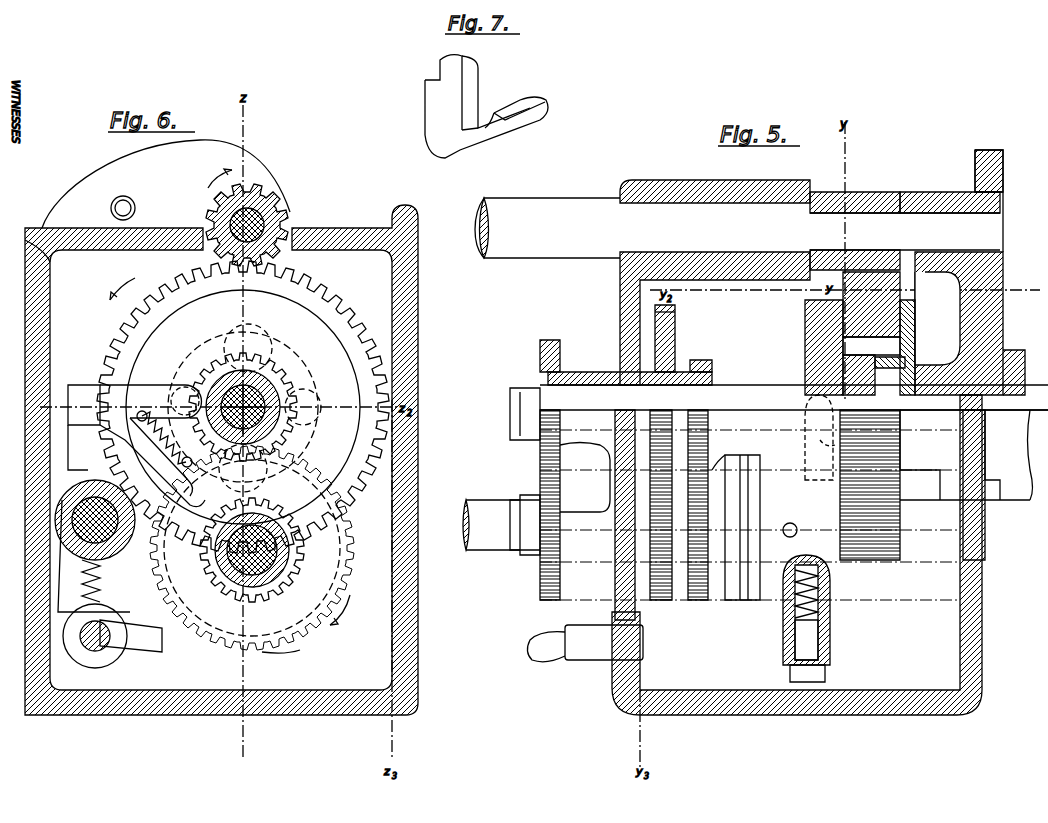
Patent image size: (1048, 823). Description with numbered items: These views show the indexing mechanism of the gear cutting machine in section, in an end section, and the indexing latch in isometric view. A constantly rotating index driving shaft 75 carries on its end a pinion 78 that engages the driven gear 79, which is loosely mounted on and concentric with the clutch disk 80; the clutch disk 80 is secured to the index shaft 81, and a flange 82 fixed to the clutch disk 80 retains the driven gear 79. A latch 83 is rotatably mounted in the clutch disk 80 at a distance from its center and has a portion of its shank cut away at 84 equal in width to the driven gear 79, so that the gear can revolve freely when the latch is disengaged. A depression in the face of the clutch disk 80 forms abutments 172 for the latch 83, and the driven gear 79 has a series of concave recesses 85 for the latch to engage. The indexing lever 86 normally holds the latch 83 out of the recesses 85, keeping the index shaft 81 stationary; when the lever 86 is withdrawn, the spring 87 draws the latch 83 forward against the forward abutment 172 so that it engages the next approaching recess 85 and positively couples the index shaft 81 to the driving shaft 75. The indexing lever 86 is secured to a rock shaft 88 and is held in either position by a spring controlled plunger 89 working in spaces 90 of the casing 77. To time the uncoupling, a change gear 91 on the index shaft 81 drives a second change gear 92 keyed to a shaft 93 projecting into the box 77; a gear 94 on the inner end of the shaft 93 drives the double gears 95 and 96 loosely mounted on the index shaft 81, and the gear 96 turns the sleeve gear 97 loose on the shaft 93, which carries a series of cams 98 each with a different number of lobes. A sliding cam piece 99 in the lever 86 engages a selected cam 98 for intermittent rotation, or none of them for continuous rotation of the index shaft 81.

In FIG. 6, the index driving shaft 75 is at (270, 248).
In FIG. 5, the index driving shaft 75 is at (545, 200).
In FIG. 6, the casing 77 is at (372, 232).
In FIG. 5, the casing 77 is at (722, 184).
In FIG. 6, the pinion 78 is at (275, 216).
In FIG. 5, the pinion 78 is at (866, 196).
In FIG. 6, the driven gear 79 is at (330, 282).
In FIG. 5, the driven gear 79 is at (902, 286).
In FIG. 6, the clutch disk 80 is at (165, 326).
In FIG. 5, the clutch disk 80 is at (804, 326).
In FIG. 6, the index shaft 81 is at (270, 445).
In FIG. 5, the index shaft 81 is at (1028, 440).
In FIG. 5, the flange 82 is at (916, 318).
In FIG. 6, the latch 83 is at (100, 388).
In FIG. 7, the latch 83 is at (480, 72).
In FIG. 7, the cut away portion 84 is at (498, 113).
In FIG. 6, the concave recesses 85 is at (265, 338).
In FIG. 5, the concave recesses 85 is at (906, 348).
In FIG. 6, the indexing lever 86 is at (68, 460).
In FIG. 5, the indexing lever 86 is at (830, 600).
In FIG. 6, the spring 87 is at (158, 436).
In FIG. 6, the rock shaft 88 is at (58, 520).
In FIG. 5, the rock shaft 88 is at (505, 530).
In FIG. 5, the spring controlled plunger 89 is at (822, 638).
In FIG. 6, the spaces 90 is at (98, 664).
In FIG. 5, the spaces 90 is at (812, 672).
In FIG. 5, the change gear 91 is at (538, 352).
In FIG. 5, the second change gear 92 is at (540, 598).
In FIG. 6, the shaft 93 is at (288, 572).
In FIG. 5, the shaft 93 is at (595, 570).
In FIG. 6, the gear 94 is at (244, 596).
In FIG. 5, the gear 94 is at (660, 602).
In FIG. 6, the gear 95 is at (205, 332).
In FIG. 5, the gear 95 is at (676, 332).
In FIG. 6, the gear 96 is at (283, 436).
In FIG. 5, the gear 96 is at (712, 368).
In FIG. 6, the sleeve gear 97 is at (205, 638).
In FIG. 5, the sleeve gear 97 is at (692, 650).
In FIG. 6, the cams 98 is at (296, 640).
In FIG. 5, the cams 98 is at (722, 470).
In FIG. 6, the sliding cam piece 99 is at (150, 640).
In FIG. 5, the sliding cam piece 99 is at (582, 660).
In FIG. 6, the abutments 172 is at (150, 386).